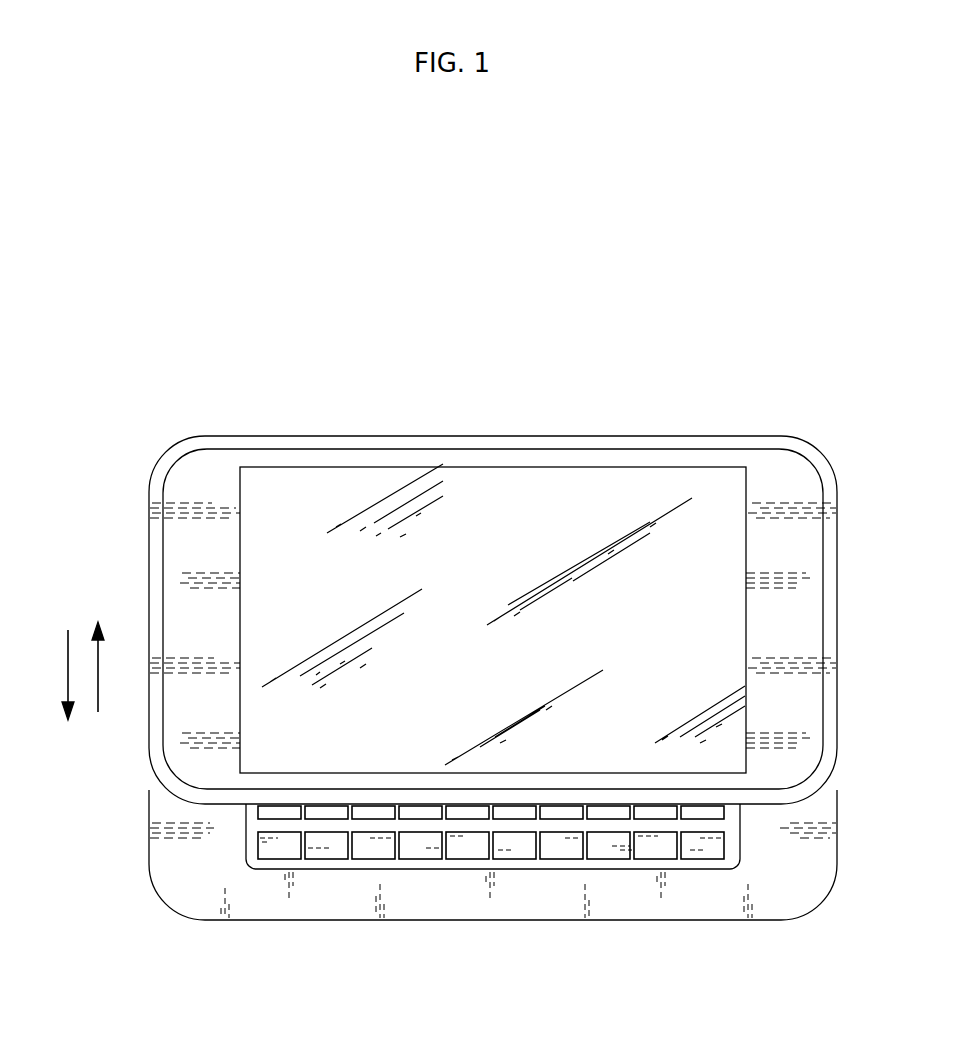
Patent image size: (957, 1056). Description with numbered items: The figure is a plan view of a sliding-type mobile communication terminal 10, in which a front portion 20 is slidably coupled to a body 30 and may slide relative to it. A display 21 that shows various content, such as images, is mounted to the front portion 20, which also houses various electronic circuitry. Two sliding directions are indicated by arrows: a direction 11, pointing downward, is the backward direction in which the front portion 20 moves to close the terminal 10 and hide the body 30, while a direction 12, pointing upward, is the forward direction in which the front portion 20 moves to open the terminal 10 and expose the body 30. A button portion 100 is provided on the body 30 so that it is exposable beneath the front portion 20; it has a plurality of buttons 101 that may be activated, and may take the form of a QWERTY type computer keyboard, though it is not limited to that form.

The mobile communication terminal 10 is at (180, 330).
The direction 11 is at (68, 646).
The direction 12 is at (98, 696).
The front portion 20 is at (318, 436).
The display 21 is at (484, 484).
The body 30 is at (250, 904).
The button portion 100 is at (352, 870).
The buttons 101 is at (465, 851).